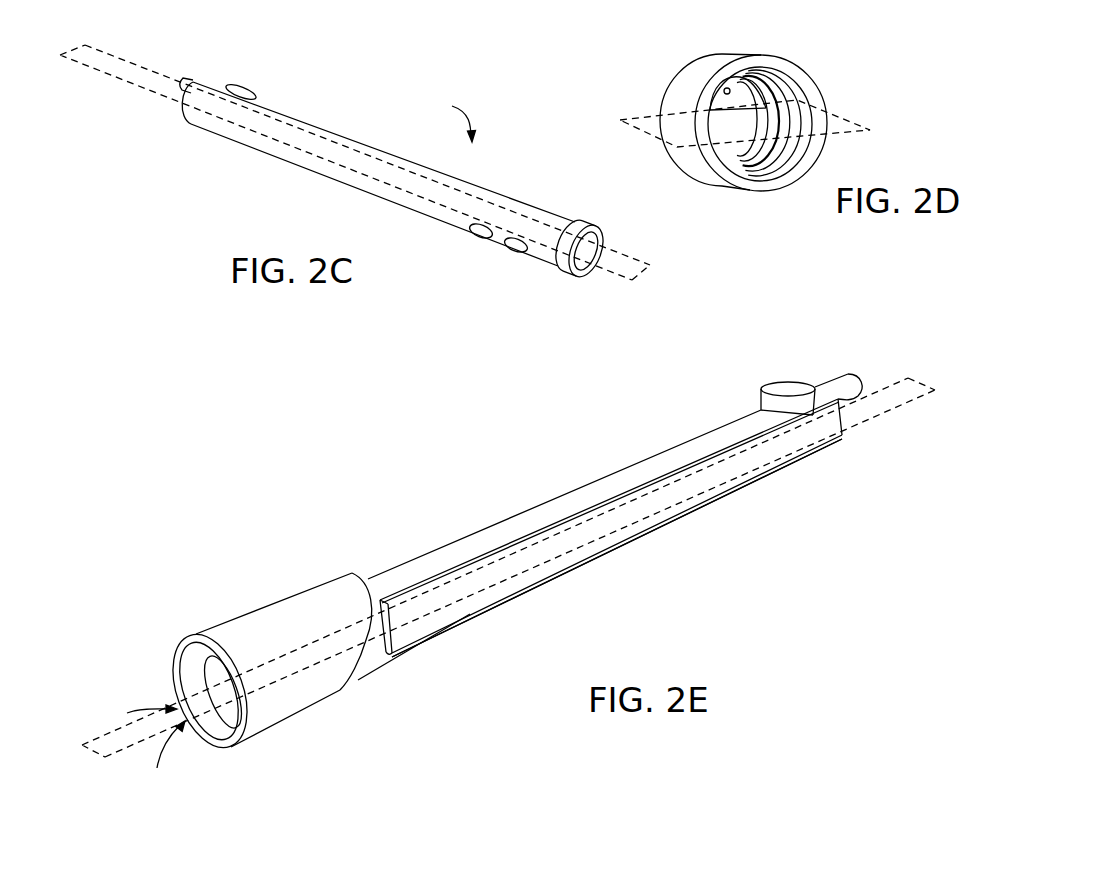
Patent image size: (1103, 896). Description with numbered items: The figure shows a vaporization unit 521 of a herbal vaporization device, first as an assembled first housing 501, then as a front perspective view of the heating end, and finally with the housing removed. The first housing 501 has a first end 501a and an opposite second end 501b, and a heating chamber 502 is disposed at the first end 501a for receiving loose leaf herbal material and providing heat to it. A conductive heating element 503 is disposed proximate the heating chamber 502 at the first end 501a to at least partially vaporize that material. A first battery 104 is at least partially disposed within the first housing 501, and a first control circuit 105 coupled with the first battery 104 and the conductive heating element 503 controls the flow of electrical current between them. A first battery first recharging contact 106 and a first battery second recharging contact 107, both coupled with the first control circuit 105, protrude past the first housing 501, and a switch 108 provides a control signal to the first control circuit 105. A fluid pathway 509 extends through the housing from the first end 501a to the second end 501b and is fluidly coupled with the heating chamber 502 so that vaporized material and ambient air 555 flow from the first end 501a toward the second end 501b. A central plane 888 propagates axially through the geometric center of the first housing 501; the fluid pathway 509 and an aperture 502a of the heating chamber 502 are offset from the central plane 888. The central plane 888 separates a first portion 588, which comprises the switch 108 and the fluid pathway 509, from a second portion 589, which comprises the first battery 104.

In FIG. 2C, the central plane 888 is at (136, 76).
In FIG. 2D, the central plane 888 is at (648, 117).
In FIG. 2E, the central plane 888 is at (902, 379).
In FIG. 2C, the fluid pathway 509 is at (197, 76).
In FIG. 2E, the fluid pathway 509 is at (528, 523).
In FIG. 2C, the switch 108 is at (247, 84).
In FIG. 2E, the switch 108 is at (781, 383).
In FIG. 2C, the first housing 501 is at (350, 140).
In FIG. 2C, the vaporization unit 521 is at (444, 115).
In FIG. 2C, the second end 501b is at (183, 124).
In FIG. 2E, the second end 501b is at (858, 427).
In FIG. 2C, the conductive heating element 503 is at (593, 231).
In FIG. 2D, the conductive heating element 503 is at (786, 79).
In FIG. 2E, the conductive heating element 503 is at (203, 650).
In FIG. 2C, the first battery first recharging contact 106 is at (480, 242).
In FIG. 2C, the first battery second recharging contact 107 is at (523, 255).
In FIG. 2C, the heating chamber 502 is at (580, 290).
In FIG. 2E, the heating chamber 502 is at (222, 757).
In FIG. 2C, the first end 501a is at (602, 274).
In FIG. 2E, the first end 501a is at (201, 752).
In FIG. 2D, the aperture 502a is at (725, 88).
In FIG. 2E, the aperture 502a is at (313, 617).
In FIG. 2E, the first portion 588 is at (442, 530).
In FIG. 2E, the first control circuit 105 is at (648, 522).
In FIG. 2E, the second portion 589 is at (470, 640).
In FIG. 2E, the first battery 104 is at (372, 662).
In FIG. 2E, the ambient air 555 is at (128, 702).